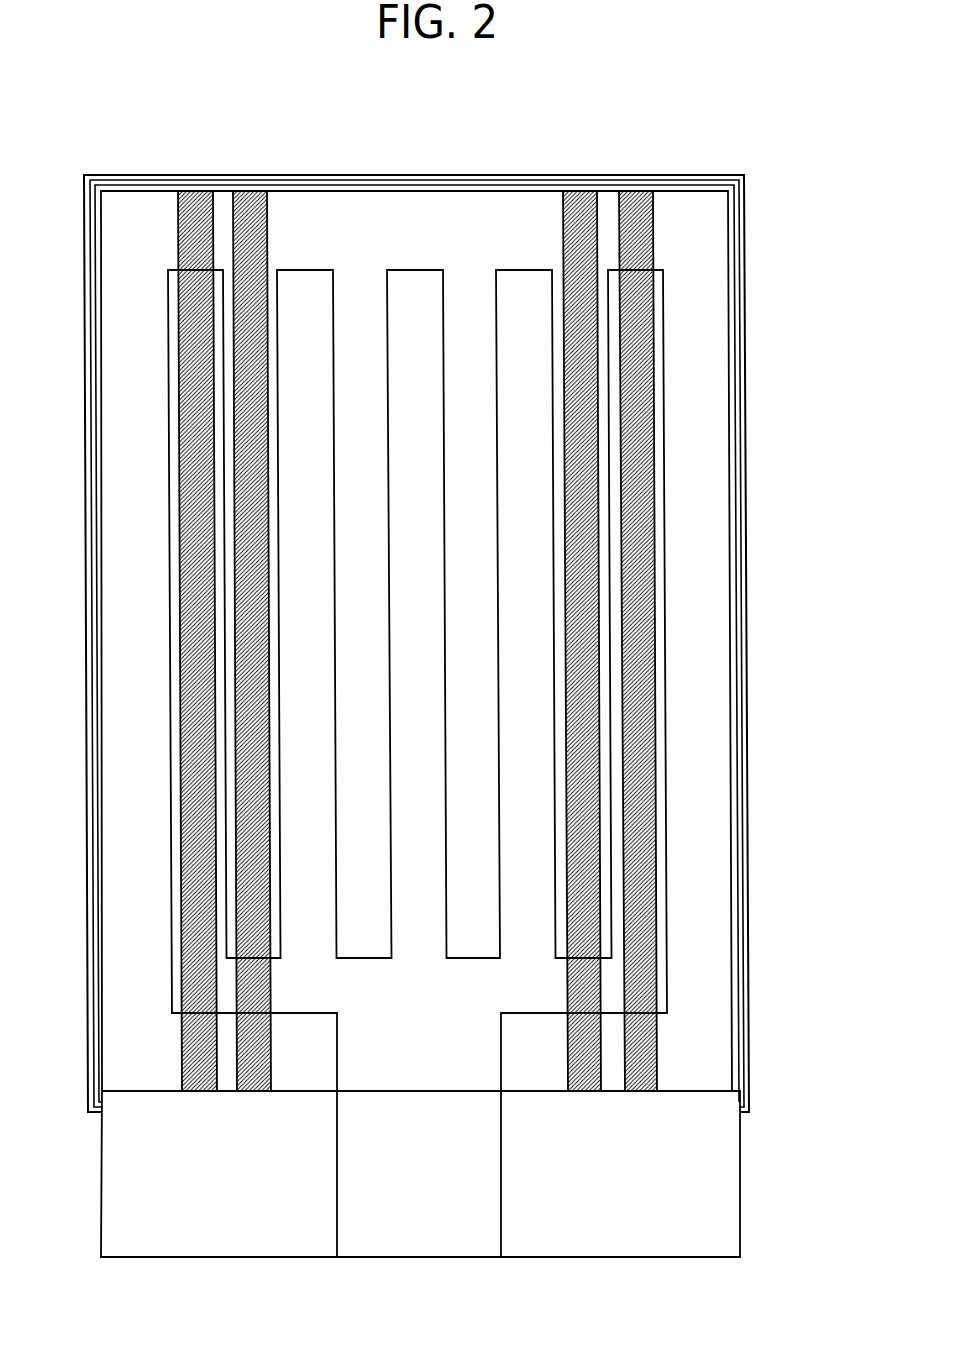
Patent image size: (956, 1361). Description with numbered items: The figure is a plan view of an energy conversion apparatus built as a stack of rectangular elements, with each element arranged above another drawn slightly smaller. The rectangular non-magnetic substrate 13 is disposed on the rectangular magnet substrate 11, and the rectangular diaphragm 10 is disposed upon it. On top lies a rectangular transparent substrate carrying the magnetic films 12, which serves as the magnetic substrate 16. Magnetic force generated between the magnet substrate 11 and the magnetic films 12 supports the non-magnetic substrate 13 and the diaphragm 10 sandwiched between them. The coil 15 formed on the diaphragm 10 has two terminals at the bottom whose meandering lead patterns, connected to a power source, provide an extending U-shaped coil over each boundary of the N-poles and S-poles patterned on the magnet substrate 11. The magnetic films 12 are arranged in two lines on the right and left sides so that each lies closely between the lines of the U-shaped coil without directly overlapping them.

The diaphragm 10 is at (722, 1163).
The magnet substrate 11 is at (708, 175).
The magnetic film 12 is at (177, 227).
The non-magnetic substrate 13 is at (736, 300).
The coil 15 is at (504, 1238).
The magnetic substrate 16 is at (128, 1092).